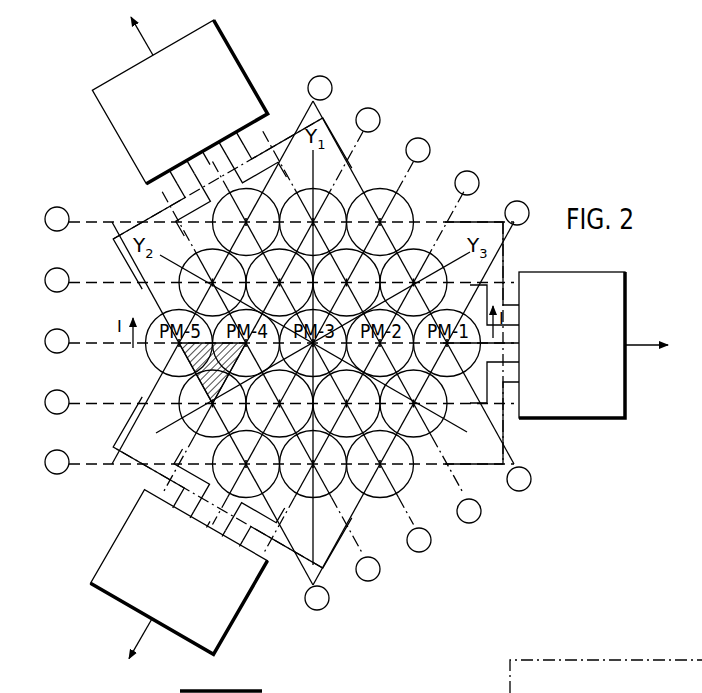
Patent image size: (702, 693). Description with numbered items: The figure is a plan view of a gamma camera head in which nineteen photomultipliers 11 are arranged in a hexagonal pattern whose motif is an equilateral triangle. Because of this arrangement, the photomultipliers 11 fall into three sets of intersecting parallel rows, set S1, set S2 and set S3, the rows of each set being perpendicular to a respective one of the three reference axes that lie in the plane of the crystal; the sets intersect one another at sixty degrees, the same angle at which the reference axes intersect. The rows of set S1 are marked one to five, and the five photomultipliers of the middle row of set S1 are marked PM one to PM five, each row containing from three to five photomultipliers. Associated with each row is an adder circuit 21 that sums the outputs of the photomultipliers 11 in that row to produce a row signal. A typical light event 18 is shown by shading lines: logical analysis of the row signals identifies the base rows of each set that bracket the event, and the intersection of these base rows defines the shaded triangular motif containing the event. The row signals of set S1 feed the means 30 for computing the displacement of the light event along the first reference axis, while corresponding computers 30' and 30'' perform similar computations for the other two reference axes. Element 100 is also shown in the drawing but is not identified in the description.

The photomultiplier 11 is at (403, 199).
The light event 18 is at (200, 355).
The adder circuit 21 is at (566, 660).
The means for computing displacement of a light event on reference axis Y1 30 is at (606, 345).
The means for computing displacement on reference axis Y3 30' is at (175, 92).
The means for computing displacement on reference axis Y2 30'' is at (168, 591).
The axis intersection point / grid line 100 is at (278, 508).
The set S1 of parallel rows S1 is at (45, 192).
The set S2 of parallel rows S2 is at (434, 130).
The set S3 of parallel rows S3 is at (431, 541).